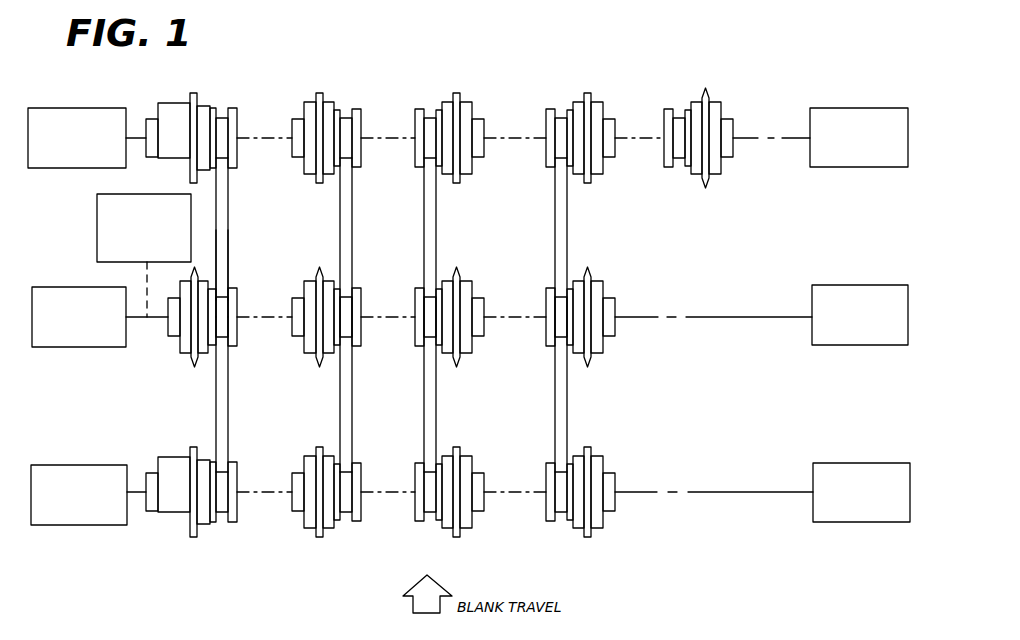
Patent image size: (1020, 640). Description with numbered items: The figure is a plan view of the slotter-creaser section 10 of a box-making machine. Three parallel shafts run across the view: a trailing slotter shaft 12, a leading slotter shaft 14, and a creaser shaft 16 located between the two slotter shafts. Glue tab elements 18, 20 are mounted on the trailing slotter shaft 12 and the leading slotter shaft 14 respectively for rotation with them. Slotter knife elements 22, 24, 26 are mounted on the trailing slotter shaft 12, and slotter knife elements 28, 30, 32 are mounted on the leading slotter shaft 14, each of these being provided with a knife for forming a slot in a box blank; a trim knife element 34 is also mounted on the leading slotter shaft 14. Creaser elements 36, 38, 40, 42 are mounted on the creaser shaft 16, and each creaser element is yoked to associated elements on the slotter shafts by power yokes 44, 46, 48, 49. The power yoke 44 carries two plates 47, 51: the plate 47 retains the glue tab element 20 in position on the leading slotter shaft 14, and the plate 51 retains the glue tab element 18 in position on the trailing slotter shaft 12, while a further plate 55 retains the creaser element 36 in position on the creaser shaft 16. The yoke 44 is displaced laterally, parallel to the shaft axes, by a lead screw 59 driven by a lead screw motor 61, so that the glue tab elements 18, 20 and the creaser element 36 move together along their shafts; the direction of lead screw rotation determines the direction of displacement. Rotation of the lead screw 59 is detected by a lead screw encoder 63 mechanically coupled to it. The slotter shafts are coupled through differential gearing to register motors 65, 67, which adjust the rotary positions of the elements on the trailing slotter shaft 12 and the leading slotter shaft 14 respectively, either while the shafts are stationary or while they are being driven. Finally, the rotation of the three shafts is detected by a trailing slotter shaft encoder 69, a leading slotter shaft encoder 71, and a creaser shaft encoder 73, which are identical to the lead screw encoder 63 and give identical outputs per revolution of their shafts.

The slotter-creaser section 10 is at (272, 558).
The trailing slotter shaft 12 is at (730, 490).
The leading slotter shaft 14 is at (752, 140).
The creaser shaft 16 is at (742, 319).
The glue tab element 18 is at (174, 461).
The glue tab element 20 is at (173, 108).
The slotter knife element 22 is at (320, 462).
The slotter knife element 24 is at (469, 462).
The slotter knife element 26 is at (601, 472).
The slotter knife element 28 is at (325, 106).
The slotter knife element 30 is at (466, 112).
The slotter knife element 32 is at (590, 110).
The trim knife element 34 is at (718, 107).
The creaser element 36 is at (224, 332).
The creaser element 38 is at (322, 282).
The creaser element 40 is at (470, 282).
The creaser element 42 is at (602, 288).
The power yoke 44 is at (241, 253).
The power yoke 46 is at (405, 249).
The plate 47 is at (229, 188).
The power yoke 48 is at (457, 246).
The power yoke 49 is at (604, 229).
The plate 51 is at (236, 408).
The plate 55 is at (226, 310).
The lead screw 59 is at (148, 322).
The lead screw motor 61 is at (66, 349).
The lead screw encoder 63 is at (97, 215).
The register motor 65 is at (100, 457).
The register motor 67 is at (108, 109).
The trailing slotter shaft encoder 69 is at (880, 464).
The leading slotter shaft encoder 71 is at (835, 115).
The creaser shaft encoder 73 is at (858, 275).